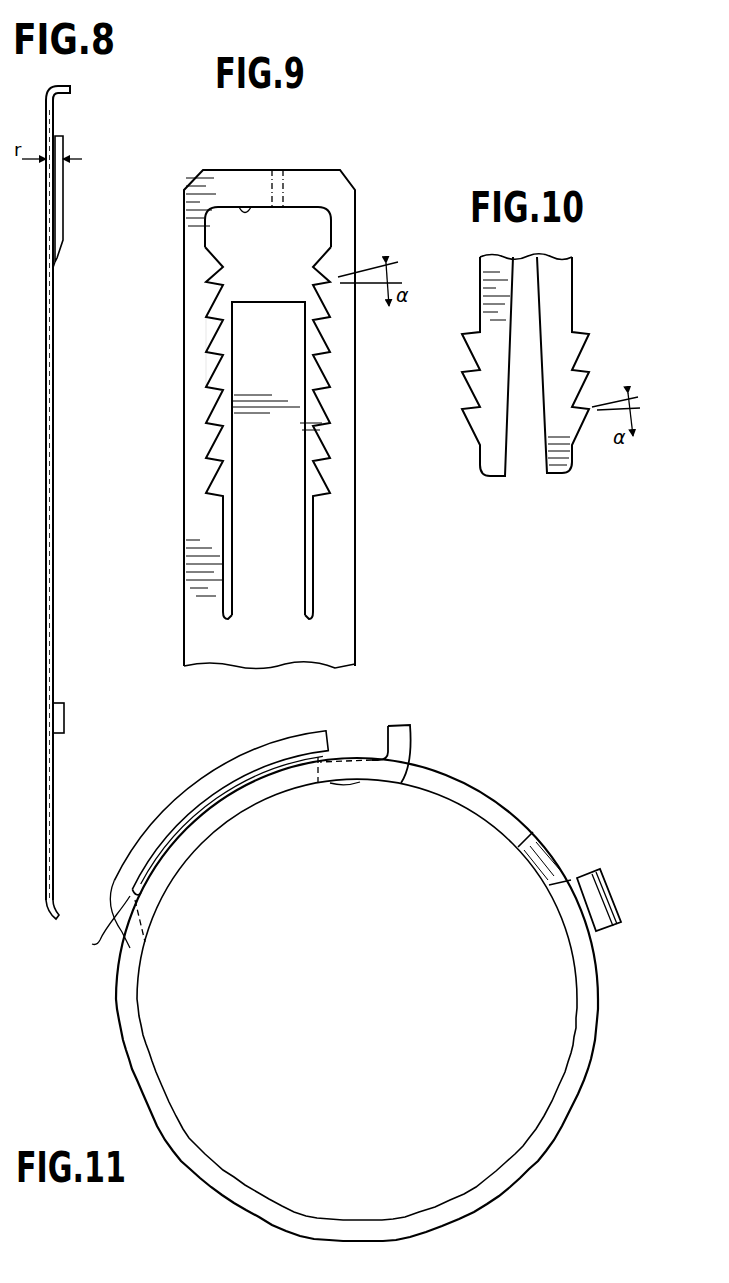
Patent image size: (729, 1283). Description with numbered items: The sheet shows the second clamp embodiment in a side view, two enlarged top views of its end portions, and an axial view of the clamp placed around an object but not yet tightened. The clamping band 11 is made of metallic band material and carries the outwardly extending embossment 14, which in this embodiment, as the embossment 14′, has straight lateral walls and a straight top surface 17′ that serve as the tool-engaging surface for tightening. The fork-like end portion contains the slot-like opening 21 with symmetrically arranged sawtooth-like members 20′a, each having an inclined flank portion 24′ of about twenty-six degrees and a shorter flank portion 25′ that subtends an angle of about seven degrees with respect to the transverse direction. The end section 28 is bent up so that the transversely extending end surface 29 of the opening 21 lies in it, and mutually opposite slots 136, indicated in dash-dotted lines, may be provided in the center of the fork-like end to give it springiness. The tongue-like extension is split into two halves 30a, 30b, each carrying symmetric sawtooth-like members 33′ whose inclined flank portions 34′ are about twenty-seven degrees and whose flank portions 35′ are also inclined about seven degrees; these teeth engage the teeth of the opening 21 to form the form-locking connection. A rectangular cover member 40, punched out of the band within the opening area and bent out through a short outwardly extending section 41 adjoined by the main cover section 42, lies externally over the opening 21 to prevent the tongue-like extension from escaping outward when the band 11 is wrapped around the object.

In FIG. 8, the clamping band 11 is at (54, 518).
In FIG. 11, the clamping band 11 is at (357, 999).
In FIG. 8, the embossment 14 is at (64, 712).
In FIG. 8, the top surface 17′ is at (64, 723).
In FIG. 11, the top surface 17′ is at (607, 884).
In FIG. 8, the cover member 40 is at (68, 200).
In FIG. 9, the cover member 40 is at (282, 563).
In FIG. 11, the cover member 40 is at (262, 744).
In FIG. 8, the short section 41 is at (58, 253).
In FIG. 11, the short section 41 is at (118, 915).
In FIG. 8, the main cover section 42 is at (64, 227).
In FIG. 11, the main cover section 42 is at (203, 786).
In FIG. 9, the opening 21 is at (289, 253).
In FIG. 9, the flank portions 24′ is at (323, 334).
In FIG. 9, the flank portions 25′ is at (327, 373).
In FIG. 9, the sawtooth-like members 20′a is at (327, 350).
In FIG. 9, the end section 28 is at (312, 186).
In FIG. 11, the end section 28 is at (400, 742).
In FIG. 9, the end surface 29 is at (245, 210).
In FIG. 9, the slots 136 is at (283, 196).
In FIG. 10, the tongue-like extension half 30a is at (495, 415).
In FIG. 10, the tongue-like extension half 30b is at (556, 407).
In FIG. 10, the sawtooth-like members 33′ is at (465, 377).
In FIG. 10, the flank portions 34′ is at (470, 393).
In FIG. 10, the flank portions 35′ is at (463, 328).
In FIG. 11, the embossment 14′ is at (600, 905).